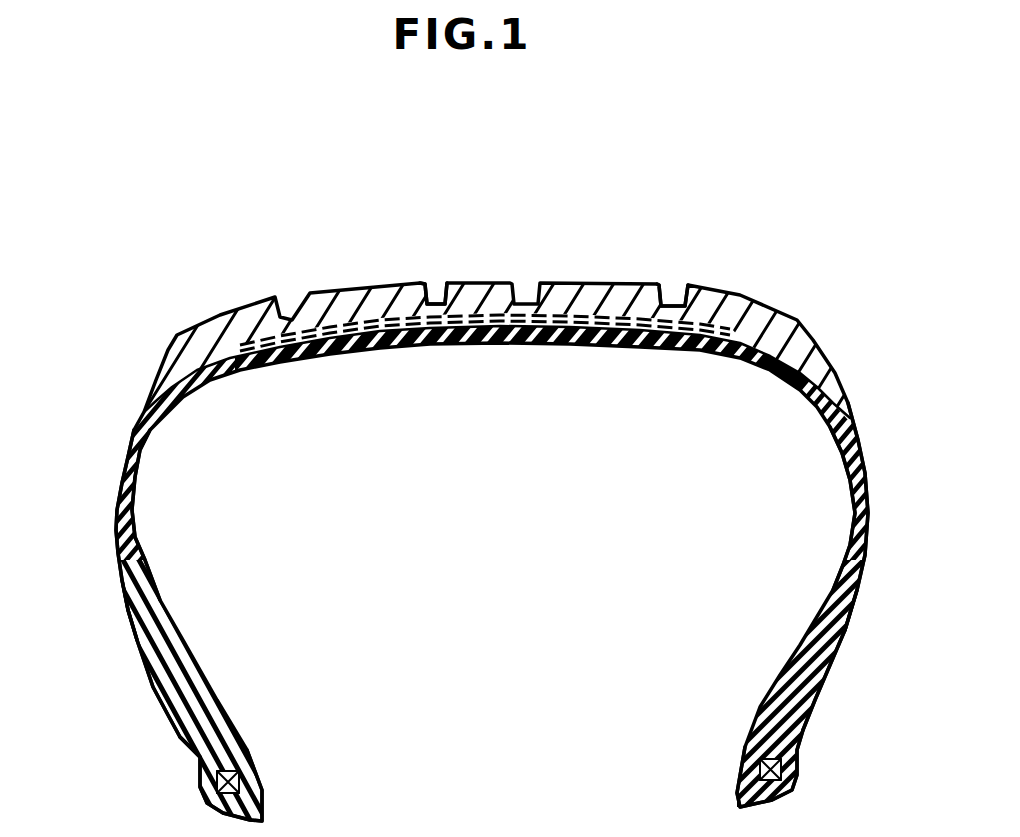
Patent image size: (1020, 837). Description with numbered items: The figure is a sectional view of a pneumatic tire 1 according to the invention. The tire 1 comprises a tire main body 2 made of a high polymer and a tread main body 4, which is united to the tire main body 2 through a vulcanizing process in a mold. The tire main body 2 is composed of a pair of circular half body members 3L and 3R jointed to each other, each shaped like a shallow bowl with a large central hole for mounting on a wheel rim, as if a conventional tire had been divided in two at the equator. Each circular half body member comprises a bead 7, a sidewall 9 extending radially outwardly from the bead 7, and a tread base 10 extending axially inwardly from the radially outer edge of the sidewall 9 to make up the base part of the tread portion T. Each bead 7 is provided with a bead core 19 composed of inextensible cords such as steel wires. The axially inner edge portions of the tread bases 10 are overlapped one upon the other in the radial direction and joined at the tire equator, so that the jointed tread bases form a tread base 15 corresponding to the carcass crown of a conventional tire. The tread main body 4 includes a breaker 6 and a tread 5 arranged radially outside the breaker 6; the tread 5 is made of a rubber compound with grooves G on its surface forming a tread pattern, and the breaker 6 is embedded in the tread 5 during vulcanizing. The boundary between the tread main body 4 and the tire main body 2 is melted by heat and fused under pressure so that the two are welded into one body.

The tire 1 is at (661, 160).
The tire main body 2 is at (489, 688).
The circular half body member 3L is at (194, 650).
The circular half body member 3R is at (786, 651).
The tread main body 4 is at (485, 429).
The tread 5 is at (327, 343).
The breaker 6 is at (287, 348).
The bead 7 is at (198, 757).
The sidewall 9 is at (120, 578).
The tread base 10 is at (370, 352).
The tread base 15 is at (510, 558).
The bead core 19 is at (240, 782).
The tread portion T is at (495, 268).
The grooves G is at (431, 283).